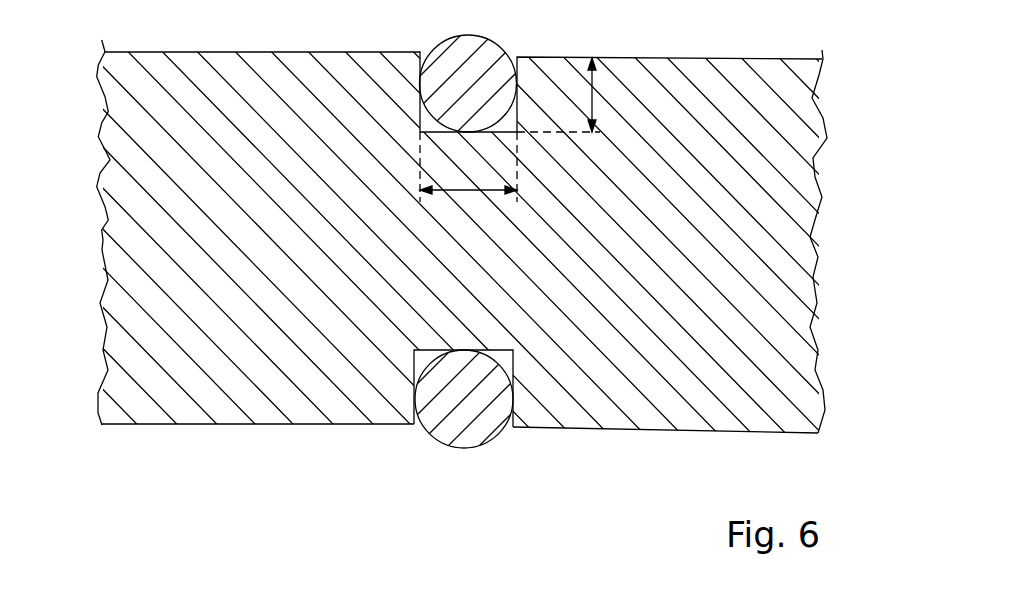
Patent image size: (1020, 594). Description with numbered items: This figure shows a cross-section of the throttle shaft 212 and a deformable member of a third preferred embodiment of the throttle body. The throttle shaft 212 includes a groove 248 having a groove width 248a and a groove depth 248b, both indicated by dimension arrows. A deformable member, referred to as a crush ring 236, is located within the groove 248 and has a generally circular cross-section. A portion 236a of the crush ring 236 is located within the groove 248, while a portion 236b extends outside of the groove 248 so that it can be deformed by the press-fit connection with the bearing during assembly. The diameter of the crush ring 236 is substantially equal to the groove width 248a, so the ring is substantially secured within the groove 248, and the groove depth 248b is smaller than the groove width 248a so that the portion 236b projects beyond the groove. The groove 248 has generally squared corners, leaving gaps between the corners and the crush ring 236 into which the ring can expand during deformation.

The throttle shaft 212 is at (726, 58).
The crush ring 236 is at (497, 427).
The portion of the crush ring located within the groove 236a is at (421, 356).
The portion of the crush ring extending outside the groove 236b is at (443, 445).
The groove 248 is at (480, 352).
The groove width 248a is at (460, 197).
The groove depth 248b is at (654, 63).